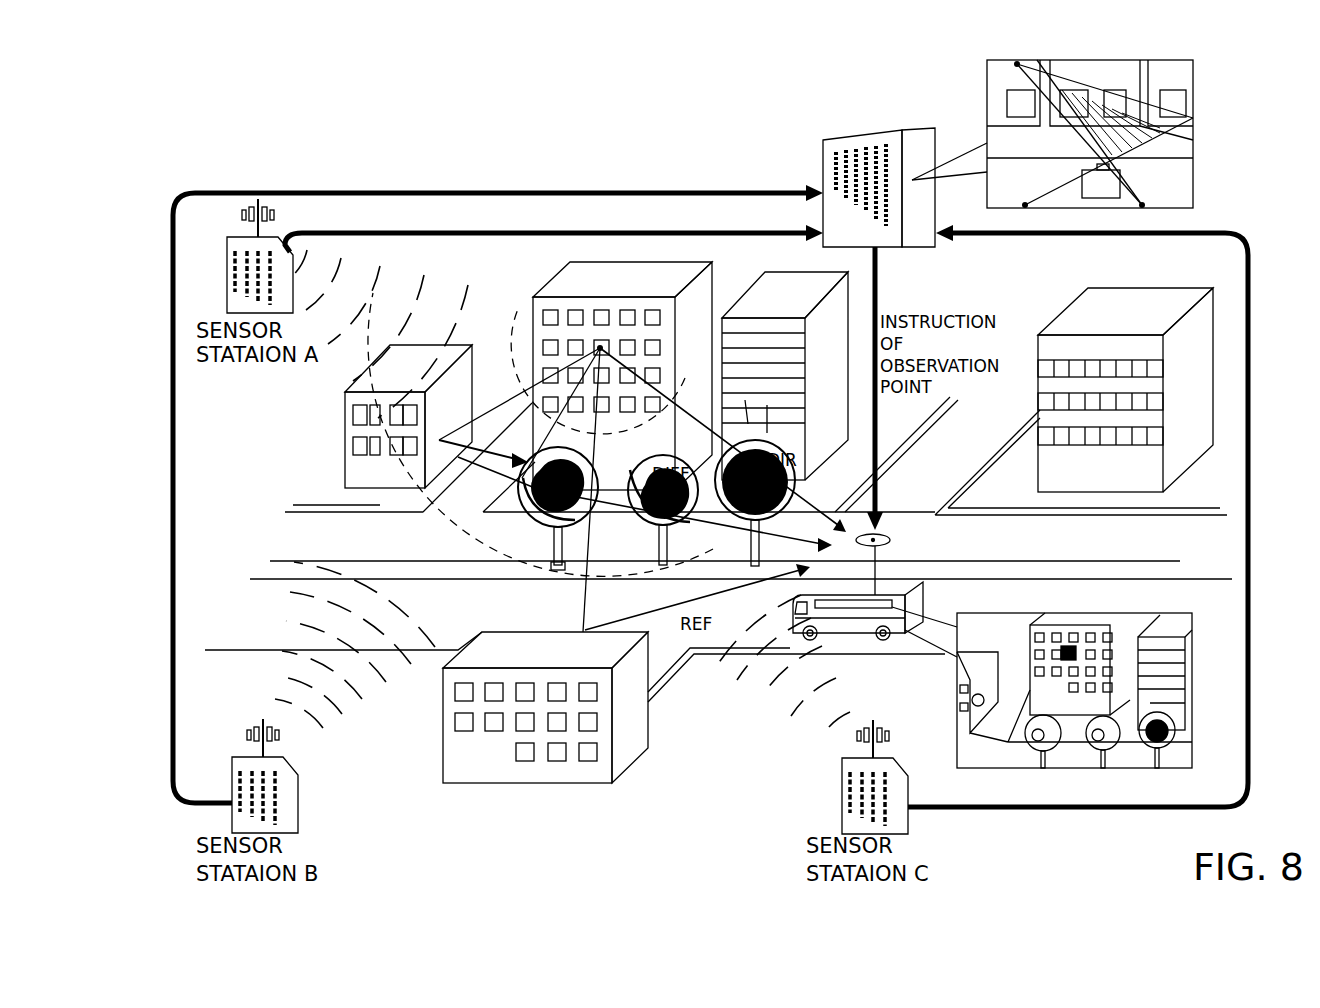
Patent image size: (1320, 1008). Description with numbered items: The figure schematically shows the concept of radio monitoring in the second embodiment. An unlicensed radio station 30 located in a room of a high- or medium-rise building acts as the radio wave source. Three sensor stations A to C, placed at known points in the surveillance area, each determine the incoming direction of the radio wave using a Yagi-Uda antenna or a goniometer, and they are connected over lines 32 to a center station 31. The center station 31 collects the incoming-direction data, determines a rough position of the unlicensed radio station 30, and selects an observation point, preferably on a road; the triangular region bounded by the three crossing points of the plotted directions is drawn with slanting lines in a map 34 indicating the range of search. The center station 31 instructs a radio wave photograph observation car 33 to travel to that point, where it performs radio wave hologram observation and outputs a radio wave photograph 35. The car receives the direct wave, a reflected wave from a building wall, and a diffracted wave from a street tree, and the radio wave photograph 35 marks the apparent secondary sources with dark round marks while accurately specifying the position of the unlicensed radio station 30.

The unlicensed radio station 30 is at (597, 347).
The center station 31 is at (957, 245).
The lines 32 is at (407, 232).
The radio wave photograph observation car 33 is at (912, 582).
The map 34 is at (1200, 94).
The radio wave photograph 35 is at (1205, 605).